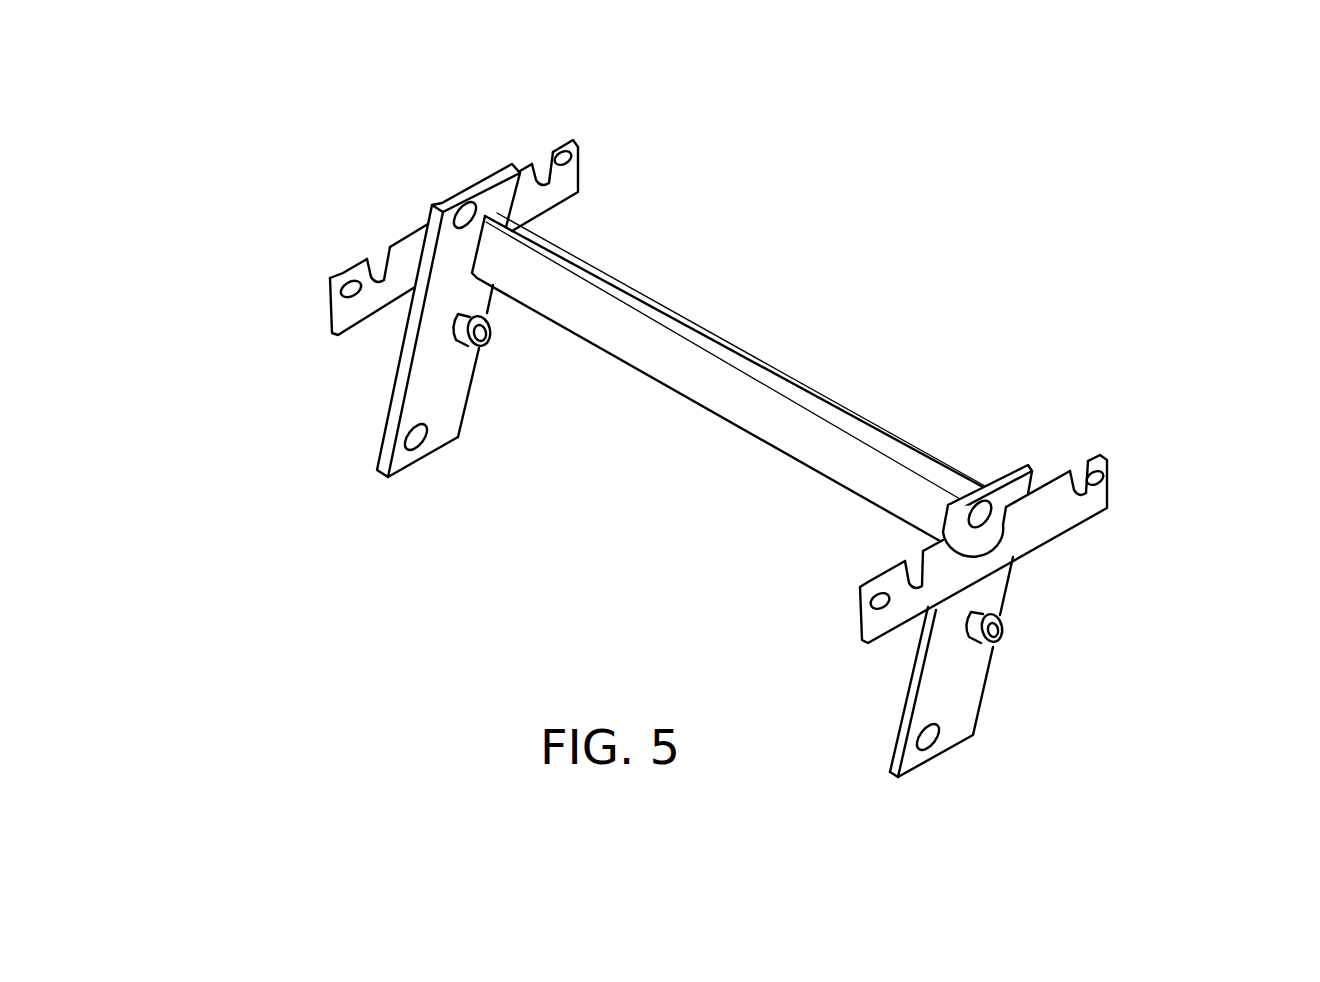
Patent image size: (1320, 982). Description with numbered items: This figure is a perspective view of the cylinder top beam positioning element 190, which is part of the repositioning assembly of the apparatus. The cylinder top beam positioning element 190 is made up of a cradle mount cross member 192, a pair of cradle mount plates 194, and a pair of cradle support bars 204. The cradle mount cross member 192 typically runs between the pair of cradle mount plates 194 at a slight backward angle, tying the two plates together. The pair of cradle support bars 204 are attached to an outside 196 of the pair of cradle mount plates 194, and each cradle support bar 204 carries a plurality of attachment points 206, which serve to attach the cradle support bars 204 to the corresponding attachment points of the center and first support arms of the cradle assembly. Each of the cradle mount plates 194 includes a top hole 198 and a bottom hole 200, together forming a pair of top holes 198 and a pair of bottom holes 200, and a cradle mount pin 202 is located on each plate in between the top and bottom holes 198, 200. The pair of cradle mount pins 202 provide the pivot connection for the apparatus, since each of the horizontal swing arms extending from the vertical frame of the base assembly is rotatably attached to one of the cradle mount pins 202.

The cylinder top beam positioning element 190 is at (992, 138).
The cradle mount cross member 192 is at (757, 405).
The cradle mount plates 194 is at (398, 355).
The outside 196 is at (980, 693).
The top holes 198 is at (467, 212).
The bottom holes 200 is at (420, 448).
The cradle mount pins 202 is at (486, 343).
The cradle support bars 204 is at (588, 162).
The attachment points 206 is at (545, 165).